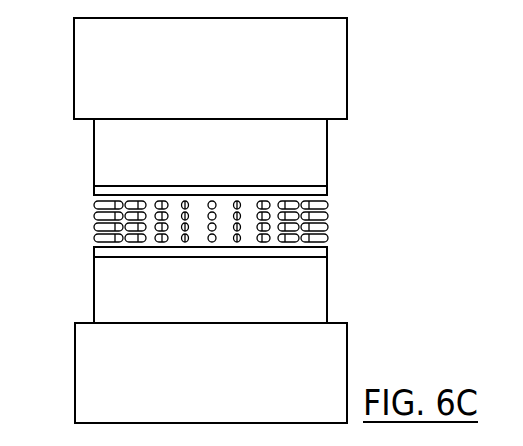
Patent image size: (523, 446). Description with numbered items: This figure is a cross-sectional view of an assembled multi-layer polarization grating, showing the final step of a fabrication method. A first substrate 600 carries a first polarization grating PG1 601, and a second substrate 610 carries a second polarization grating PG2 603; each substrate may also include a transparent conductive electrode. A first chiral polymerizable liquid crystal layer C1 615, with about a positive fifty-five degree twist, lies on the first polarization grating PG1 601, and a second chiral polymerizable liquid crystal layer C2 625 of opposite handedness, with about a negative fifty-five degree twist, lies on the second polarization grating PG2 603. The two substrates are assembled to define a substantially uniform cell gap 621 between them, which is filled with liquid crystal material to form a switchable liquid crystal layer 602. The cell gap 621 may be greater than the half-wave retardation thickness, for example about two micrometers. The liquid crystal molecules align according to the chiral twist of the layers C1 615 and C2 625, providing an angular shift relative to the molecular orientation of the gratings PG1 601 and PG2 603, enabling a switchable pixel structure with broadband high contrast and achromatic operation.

The second substrate 610 is at (187, 95).
The second polarization grating PG2 603 is at (187, 177).
The second chiral polymerizable liquid crystal layer C2 625 is at (330, 190).
The cell gap 621 is at (221, 213).
The switchable liquid crystal layer 602 is at (328, 227).
The first chiral polymerizable liquid crystal layer C1 615 is at (330, 251).
The first polarization grating PG1 601 is at (187, 313).
The first substrate 600 is at (188, 399).